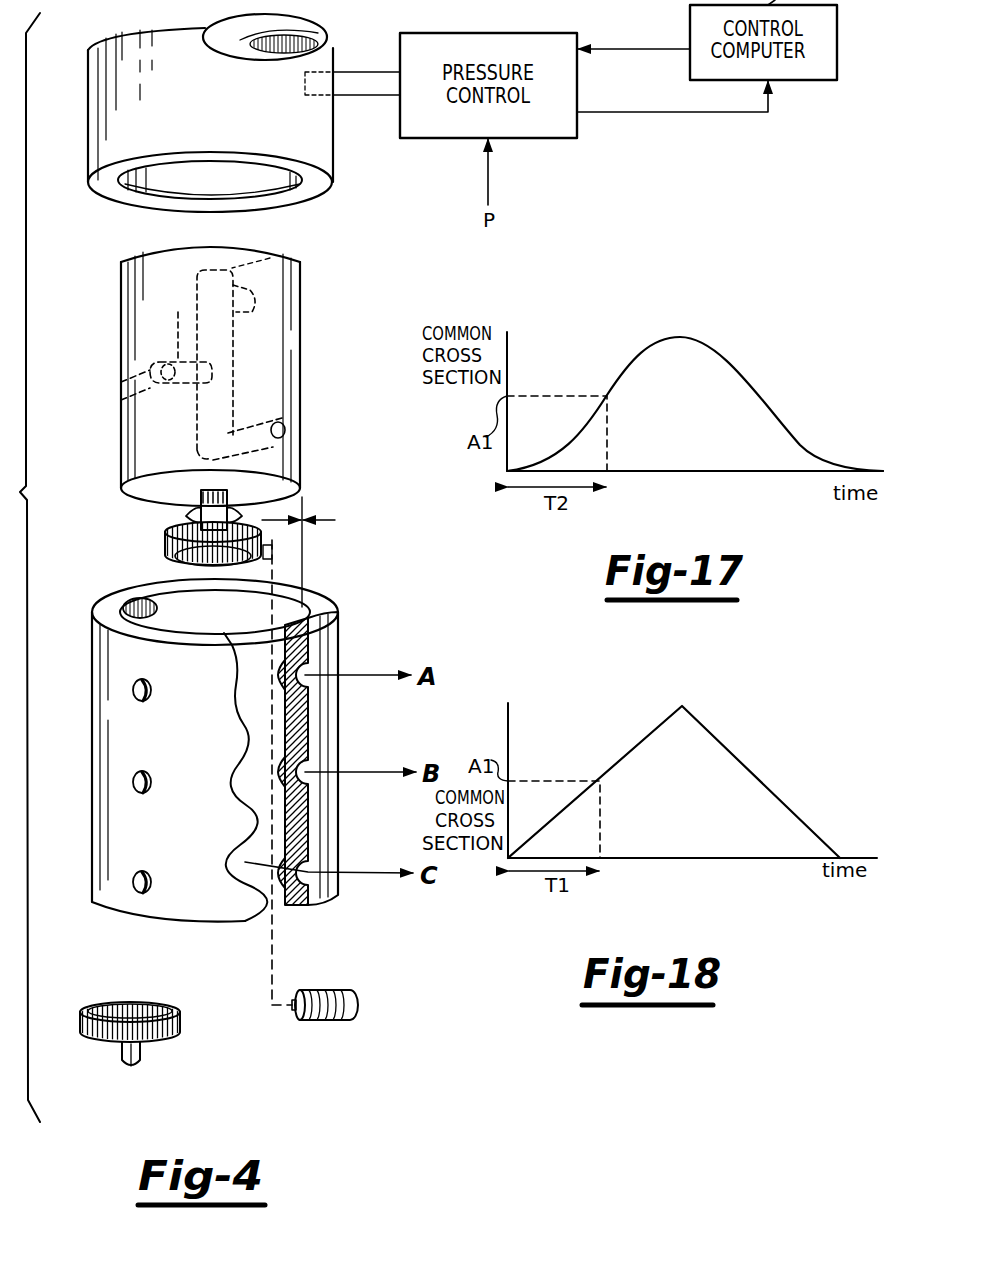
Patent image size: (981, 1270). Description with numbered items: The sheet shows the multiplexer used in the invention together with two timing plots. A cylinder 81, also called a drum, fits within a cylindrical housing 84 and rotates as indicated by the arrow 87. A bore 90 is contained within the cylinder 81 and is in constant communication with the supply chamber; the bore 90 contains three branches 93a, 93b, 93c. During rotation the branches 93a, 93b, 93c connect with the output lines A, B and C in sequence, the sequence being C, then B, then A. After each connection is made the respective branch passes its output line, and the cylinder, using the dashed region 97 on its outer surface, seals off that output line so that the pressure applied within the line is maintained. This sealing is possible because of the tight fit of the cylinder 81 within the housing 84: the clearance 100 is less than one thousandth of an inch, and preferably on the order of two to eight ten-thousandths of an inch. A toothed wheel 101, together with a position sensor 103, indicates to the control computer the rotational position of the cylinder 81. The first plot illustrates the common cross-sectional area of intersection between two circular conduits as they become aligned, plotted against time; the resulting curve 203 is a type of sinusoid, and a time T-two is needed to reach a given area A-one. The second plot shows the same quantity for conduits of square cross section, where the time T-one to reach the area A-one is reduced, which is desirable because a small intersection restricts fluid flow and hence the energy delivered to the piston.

In FIG. 4, the cylindrical housing 84 is at (330, 190).
In FIG. 4, the cylinder 81 is at (292, 322).
In FIG. 4, the bore 90 is at (292, 250).
In FIG. 4, the branch 93a is at (242, 364).
In FIG. 4, the branch 93b is at (166, 345).
In FIG. 4, the branch 93c is at (300, 392).
In FIG. 4, the dashed region 97 is at (290, 432).
In FIG. 4, the arrow 87 is at (186, 516).
In FIG. 4, the clearance 100 is at (330, 520).
In FIG. 4, the toothed wheel 101 is at (262, 558).
In FIG. 4, the position sensor 103 is at (294, 996).
In FIG. 17, the curve 203 is at (735, 358).